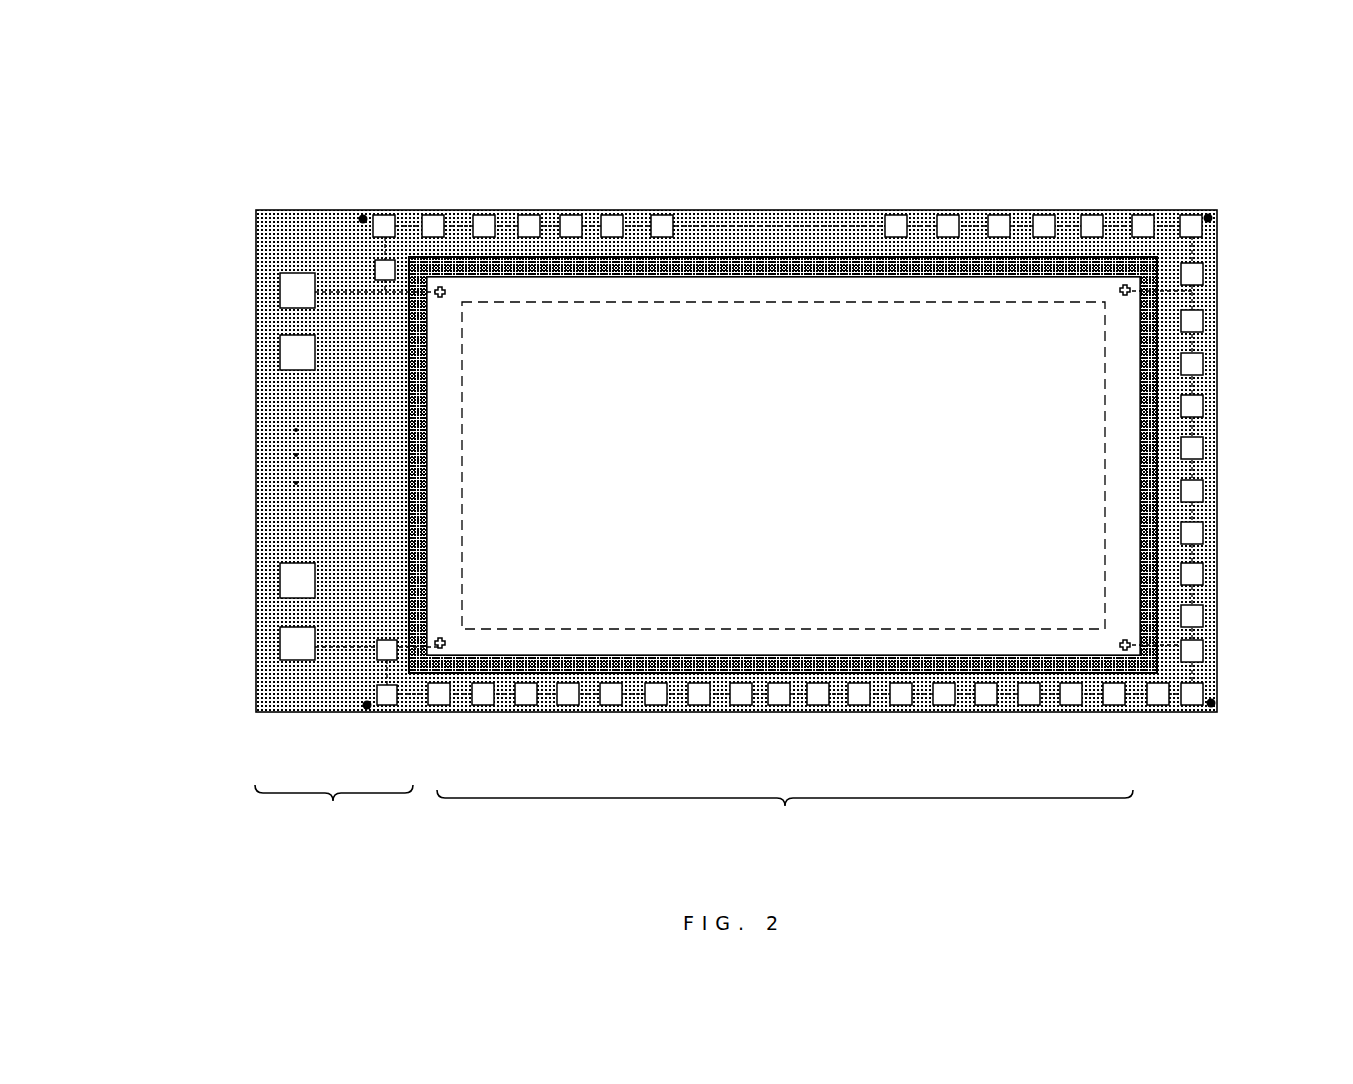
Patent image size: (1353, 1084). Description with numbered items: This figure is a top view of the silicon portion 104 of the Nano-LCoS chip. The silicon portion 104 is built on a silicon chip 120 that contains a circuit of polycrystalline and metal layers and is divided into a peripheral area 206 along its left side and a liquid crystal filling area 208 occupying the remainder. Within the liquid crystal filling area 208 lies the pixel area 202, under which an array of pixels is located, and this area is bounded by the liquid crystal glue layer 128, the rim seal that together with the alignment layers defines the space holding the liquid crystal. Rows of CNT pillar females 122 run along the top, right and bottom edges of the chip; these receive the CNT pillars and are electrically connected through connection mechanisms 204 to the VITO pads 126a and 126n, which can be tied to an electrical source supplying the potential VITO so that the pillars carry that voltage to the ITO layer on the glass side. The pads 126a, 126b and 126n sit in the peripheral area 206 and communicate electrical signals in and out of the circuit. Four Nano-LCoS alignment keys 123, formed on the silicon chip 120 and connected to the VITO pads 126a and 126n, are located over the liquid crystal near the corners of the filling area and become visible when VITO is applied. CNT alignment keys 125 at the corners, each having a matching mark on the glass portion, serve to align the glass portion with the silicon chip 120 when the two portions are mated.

The silicon portion 104 is at (292, 120).
The silicon chip 120 is at (257, 255).
The CNT pillar female 122 is at (668, 215).
The Nano-LCoS alignment key 123 is at (1122, 297).
The CNT alignment key 125 is at (363, 218).
The VITO pad 126a is at (280, 300).
The pad 126b is at (280, 343).
The VITO pad 126n is at (280, 640).
The liquid crystal glue layer 128 is at (1010, 655).
The pixel area 202 is at (690, 304).
The connection mechanism 204 is at (327, 296).
The peripheral area 206 is at (334, 825).
The liquid crystal filling area 208 is at (785, 817).